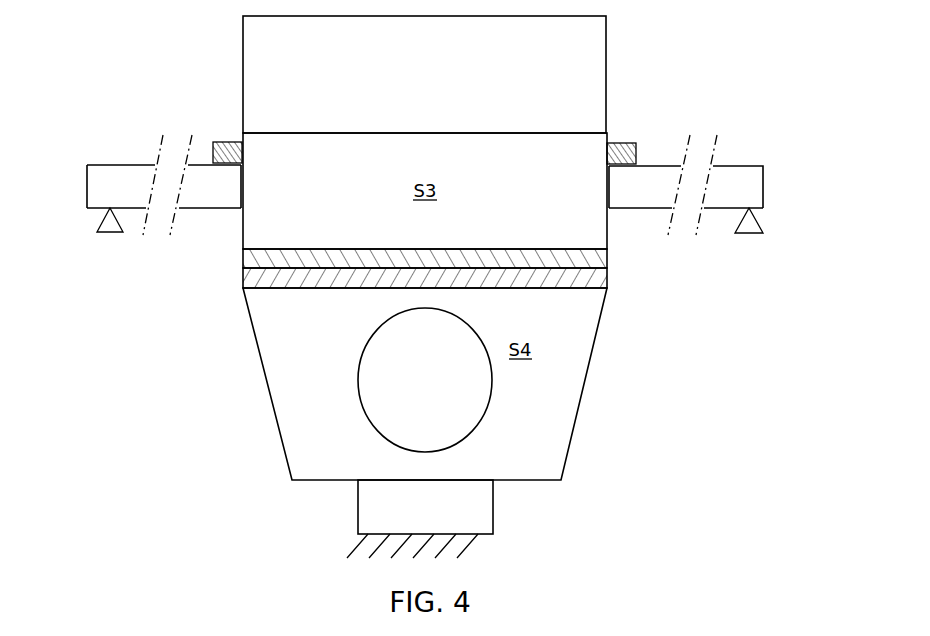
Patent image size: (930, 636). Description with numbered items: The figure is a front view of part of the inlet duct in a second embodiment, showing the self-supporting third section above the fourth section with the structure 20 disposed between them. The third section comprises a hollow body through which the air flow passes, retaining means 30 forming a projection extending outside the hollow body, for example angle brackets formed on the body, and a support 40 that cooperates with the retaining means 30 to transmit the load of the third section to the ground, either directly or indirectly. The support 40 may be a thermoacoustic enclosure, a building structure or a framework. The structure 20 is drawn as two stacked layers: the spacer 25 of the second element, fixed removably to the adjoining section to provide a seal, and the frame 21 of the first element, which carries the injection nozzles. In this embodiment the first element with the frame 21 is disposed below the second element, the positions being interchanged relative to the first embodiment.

The structure 20 is at (364, 286).
The frame 21 is at (238, 278).
The spacer 25 is at (238, 256).
The retaining means 30 is at (224, 136).
The support 40 is at (80, 158).